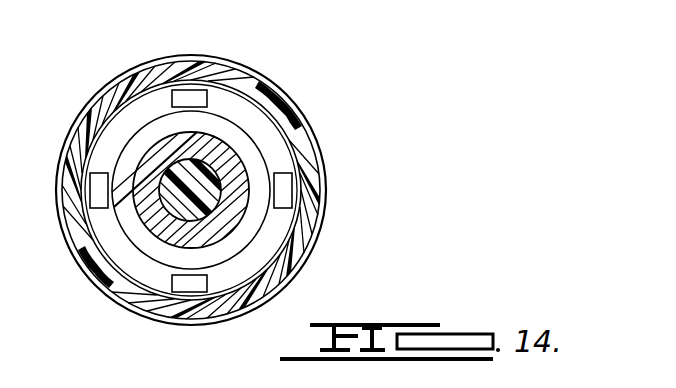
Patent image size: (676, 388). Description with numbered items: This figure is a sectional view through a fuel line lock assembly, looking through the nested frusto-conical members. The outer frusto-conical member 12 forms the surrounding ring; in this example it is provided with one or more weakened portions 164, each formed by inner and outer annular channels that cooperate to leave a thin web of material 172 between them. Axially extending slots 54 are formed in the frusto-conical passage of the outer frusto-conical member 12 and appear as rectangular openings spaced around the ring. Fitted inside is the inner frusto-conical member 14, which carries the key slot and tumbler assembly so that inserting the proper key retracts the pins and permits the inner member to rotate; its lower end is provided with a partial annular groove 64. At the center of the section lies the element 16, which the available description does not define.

The axially extending slot 54 is at (195, 86).
The weakened portion 164 is at (262, 82).
The thin web of material 172 is at (297, 115).
The shaft 16 is at (205, 166).
The outer frusto-conical member 12 is at (310, 177).
The inner frusto-conical member 14 is at (255, 222).
The partial annular groove 64 is at (162, 250).